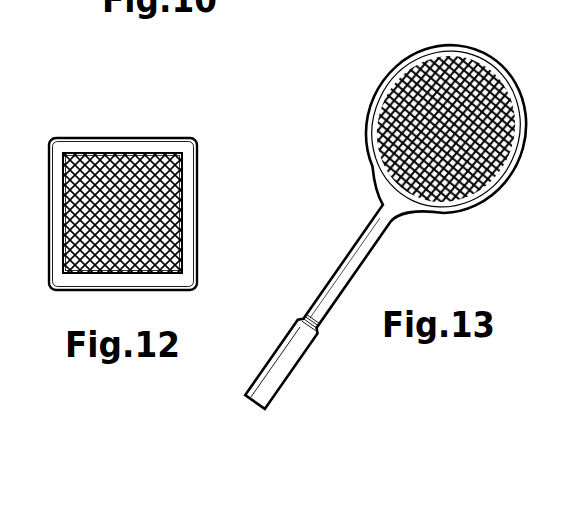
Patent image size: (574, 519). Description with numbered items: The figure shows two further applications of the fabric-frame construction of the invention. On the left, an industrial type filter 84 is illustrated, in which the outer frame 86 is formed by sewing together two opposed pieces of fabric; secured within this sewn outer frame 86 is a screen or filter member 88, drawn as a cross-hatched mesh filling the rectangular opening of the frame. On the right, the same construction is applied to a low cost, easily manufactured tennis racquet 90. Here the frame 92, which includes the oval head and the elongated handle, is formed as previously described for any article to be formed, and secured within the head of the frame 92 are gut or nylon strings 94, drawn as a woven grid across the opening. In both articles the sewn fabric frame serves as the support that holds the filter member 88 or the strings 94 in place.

In FIG. 12, the industrial type filter 84 is at (153, 181).
In FIG. 12, the outer frame 86 is at (189, 208).
In FIG. 12, the screen or filter member 88 is at (167, 250).
In FIG. 13, the tennis racquet 90 is at (395, 218).
In FIG. 13, the frame 92 is at (378, 199).
In FIG. 13, the gut or nylon strings 94 is at (383, 118).